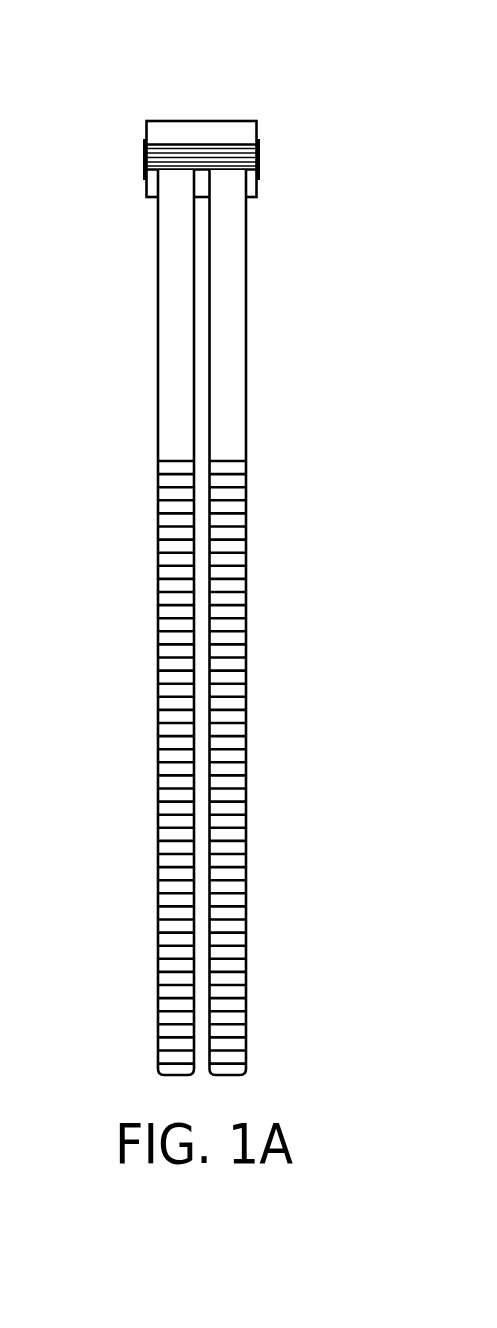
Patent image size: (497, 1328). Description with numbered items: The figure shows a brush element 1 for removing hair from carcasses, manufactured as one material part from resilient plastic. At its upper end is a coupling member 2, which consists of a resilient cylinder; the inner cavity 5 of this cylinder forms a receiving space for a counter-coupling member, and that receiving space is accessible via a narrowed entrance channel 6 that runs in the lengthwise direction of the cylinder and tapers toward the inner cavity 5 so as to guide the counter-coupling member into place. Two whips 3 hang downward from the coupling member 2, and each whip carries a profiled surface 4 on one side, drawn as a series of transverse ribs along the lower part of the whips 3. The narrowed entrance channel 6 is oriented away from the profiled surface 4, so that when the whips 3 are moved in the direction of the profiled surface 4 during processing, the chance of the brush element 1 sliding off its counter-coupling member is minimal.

The brush element 1 is at (98, 89).
The coupling member 2 is at (203, 128).
The whips 3 is at (227, 343).
The profiled surface 4 is at (163, 707).
The inner cavity 5 is at (145, 156).
The narrowed entrance channel 6 is at (260, 156).